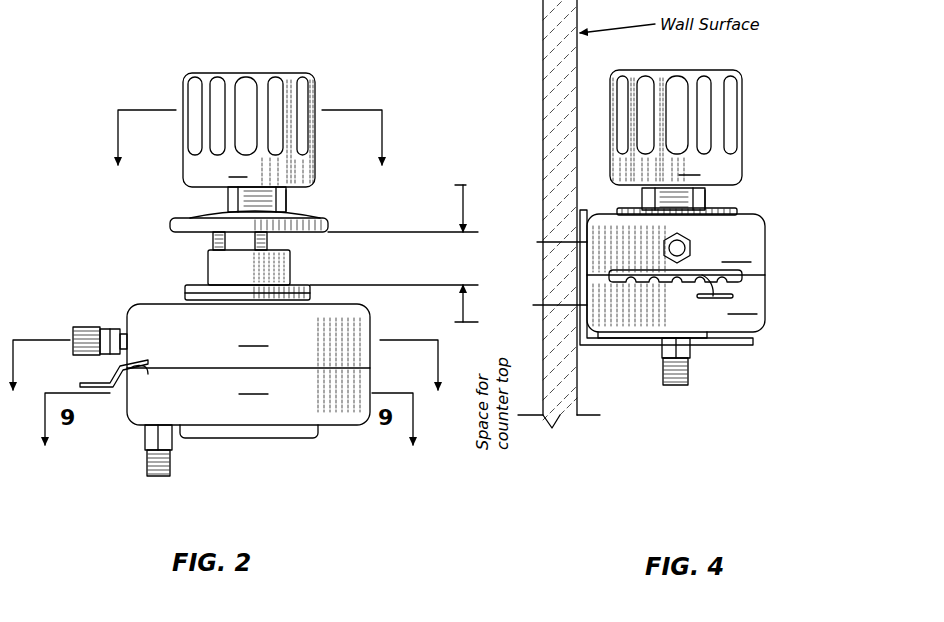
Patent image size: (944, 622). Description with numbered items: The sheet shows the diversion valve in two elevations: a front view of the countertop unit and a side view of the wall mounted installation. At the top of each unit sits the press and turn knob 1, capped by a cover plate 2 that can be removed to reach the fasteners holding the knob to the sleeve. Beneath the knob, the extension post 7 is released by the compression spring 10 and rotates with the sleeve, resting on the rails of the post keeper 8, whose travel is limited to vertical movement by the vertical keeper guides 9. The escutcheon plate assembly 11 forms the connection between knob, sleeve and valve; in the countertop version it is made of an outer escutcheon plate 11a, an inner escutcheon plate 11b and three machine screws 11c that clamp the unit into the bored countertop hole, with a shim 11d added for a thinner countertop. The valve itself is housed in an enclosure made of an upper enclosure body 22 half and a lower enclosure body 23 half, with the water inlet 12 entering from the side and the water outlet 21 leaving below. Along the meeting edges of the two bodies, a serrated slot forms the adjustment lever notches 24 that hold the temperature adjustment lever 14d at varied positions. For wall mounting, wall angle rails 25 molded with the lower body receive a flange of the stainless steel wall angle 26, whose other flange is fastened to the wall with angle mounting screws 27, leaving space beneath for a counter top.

In FIG. 2, the press and turn knob 1 is at (238, 167).
In FIG. 4, the press and turn knob 1 is at (689, 165).
In FIG. 2, the cover plate 2 is at (263, 116).
In FIG. 4, the cover plate 2 is at (696, 114).
In FIG. 2, the extension post 7 is at (250, 137).
In FIG. 2, the post keeper 8 is at (225, 365).
In FIG. 2, the vertical keeper guides 9 is at (290, 201).
In FIG. 4, the vertical keeper guides 9 is at (713, 197).
In FIG. 2, the compression spring 10 is at (228, 204).
In FIG. 4, the compression spring 10 is at (729, 176).
In FIG. 4, the escutcheon plate assembly 11 is at (618, 188).
In FIG. 2, the outer escutcheon plate 11a is at (331, 222).
In FIG. 2, the inner escutcheon plate 11b is at (249, 267).
In FIG. 2, the machine screws 11c is at (212, 243).
In FIG. 2, the shim 11d is at (185, 291).
In FIG. 2, the water inlet 12 is at (106, 324).
In FIG. 4, the water inlet 12 is at (693, 242).
In FIG. 2, the temperature adjustment lever 14d is at (106, 416).
In FIG. 4, the temperature adjustment lever 14d is at (751, 318).
In FIG. 2, the water outlet 21 is at (173, 477).
In FIG. 4, the water outlet 21 is at (693, 386).
In FIG. 2, the upper enclosure body 22 is at (248, 336).
In FIG. 4, the upper enclosure body 22 is at (676, 244).
In FIG. 2, the lower enclosure body 23 is at (248, 396).
In FIG. 4, the lower enclosure body 23 is at (676, 303).
In FIG. 2, the adjustment lever notches 24 is at (110, 437).
In FIG. 4, the adjustment lever notches 24 is at (747, 281).
In FIG. 2, the wall angle rails 25 is at (250, 439).
In FIG. 4, the wall angle rails 25 is at (681, 357).
In FIG. 4, the wall angle 26 is at (666, 309).
In FIG. 4, the angle mounting screws 27 is at (574, 304).